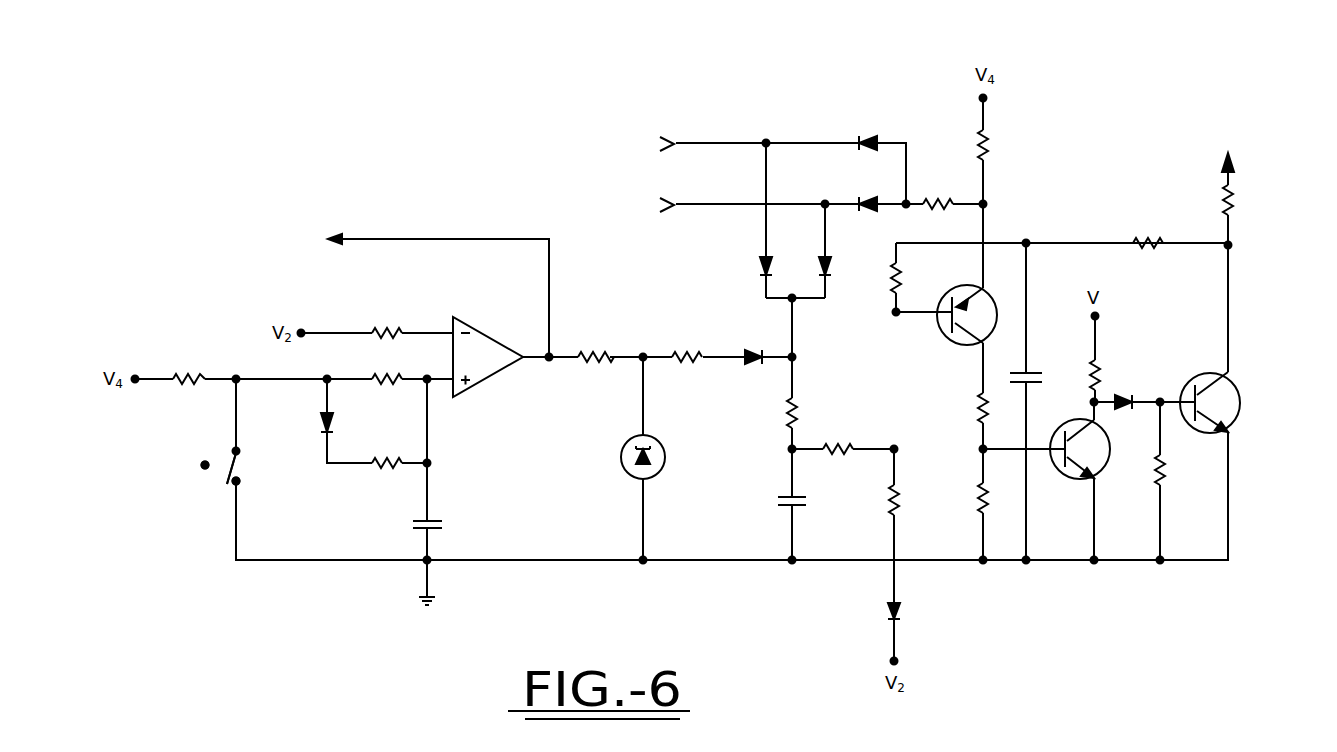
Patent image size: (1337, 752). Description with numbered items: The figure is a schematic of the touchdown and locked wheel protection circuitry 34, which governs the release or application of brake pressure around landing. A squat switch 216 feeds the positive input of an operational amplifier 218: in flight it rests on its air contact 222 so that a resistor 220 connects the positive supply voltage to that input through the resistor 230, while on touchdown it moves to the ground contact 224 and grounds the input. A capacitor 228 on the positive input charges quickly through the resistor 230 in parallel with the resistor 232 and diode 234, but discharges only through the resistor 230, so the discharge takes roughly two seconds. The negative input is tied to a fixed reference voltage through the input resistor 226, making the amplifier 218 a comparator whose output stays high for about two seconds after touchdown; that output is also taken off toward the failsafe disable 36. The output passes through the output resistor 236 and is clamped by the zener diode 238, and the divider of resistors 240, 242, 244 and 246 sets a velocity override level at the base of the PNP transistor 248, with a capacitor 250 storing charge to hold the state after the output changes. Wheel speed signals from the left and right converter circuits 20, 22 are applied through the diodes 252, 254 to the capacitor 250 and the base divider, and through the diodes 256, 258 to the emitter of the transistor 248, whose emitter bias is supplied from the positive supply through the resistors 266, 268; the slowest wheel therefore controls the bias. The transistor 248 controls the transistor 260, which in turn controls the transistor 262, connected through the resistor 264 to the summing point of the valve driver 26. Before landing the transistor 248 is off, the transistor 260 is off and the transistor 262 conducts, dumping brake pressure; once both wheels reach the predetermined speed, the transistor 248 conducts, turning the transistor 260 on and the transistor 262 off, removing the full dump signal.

The touchdown and locked wheel protection circuitry 34 is at (305, 167).
The failsafe disable output 36 is at (189, 237).
The left wheel speed converter circuit 20 is at (533, 143).
The right wheel speed converter circuit 22 is at (533, 203).
The valve driver circuit 26 is at (1222, 150).
The squat switch 216 is at (189, 486).
The operational amplifier 218 is at (488, 378).
The resistor 220 is at (189, 364).
The air contact 222 is at (208, 457).
The ground contact 224 is at (238, 484).
The input resistor 226 is at (385, 319).
The capacitor 228 is at (448, 522).
The resistor 230 is at (385, 365).
The resistor 232 is at (385, 449).
The diode 234 is at (347, 419).
The output resistor 236 is at (594, 340).
The zener diode 238 is at (654, 475).
The resistor 240 is at (715, 341).
The resistor 242 is at (768, 413).
The resistor 244 is at (835, 436).
The resistor 246 is at (915, 552).
The PNP transistor 248 is at (966, 345).
The capacitor 250 is at (812, 497).
The diode 252 is at (735, 264).
The diode 254 is at (846, 264).
The diode 256 is at (864, 130).
The diode 258 is at (864, 192).
The transistor 260 is at (1078, 478).
The transistor 262 is at (1204, 372).
The resistor 264 is at (1252, 200).
The resistor 266 is at (1006, 145).
The resistor 268 is at (937, 191).